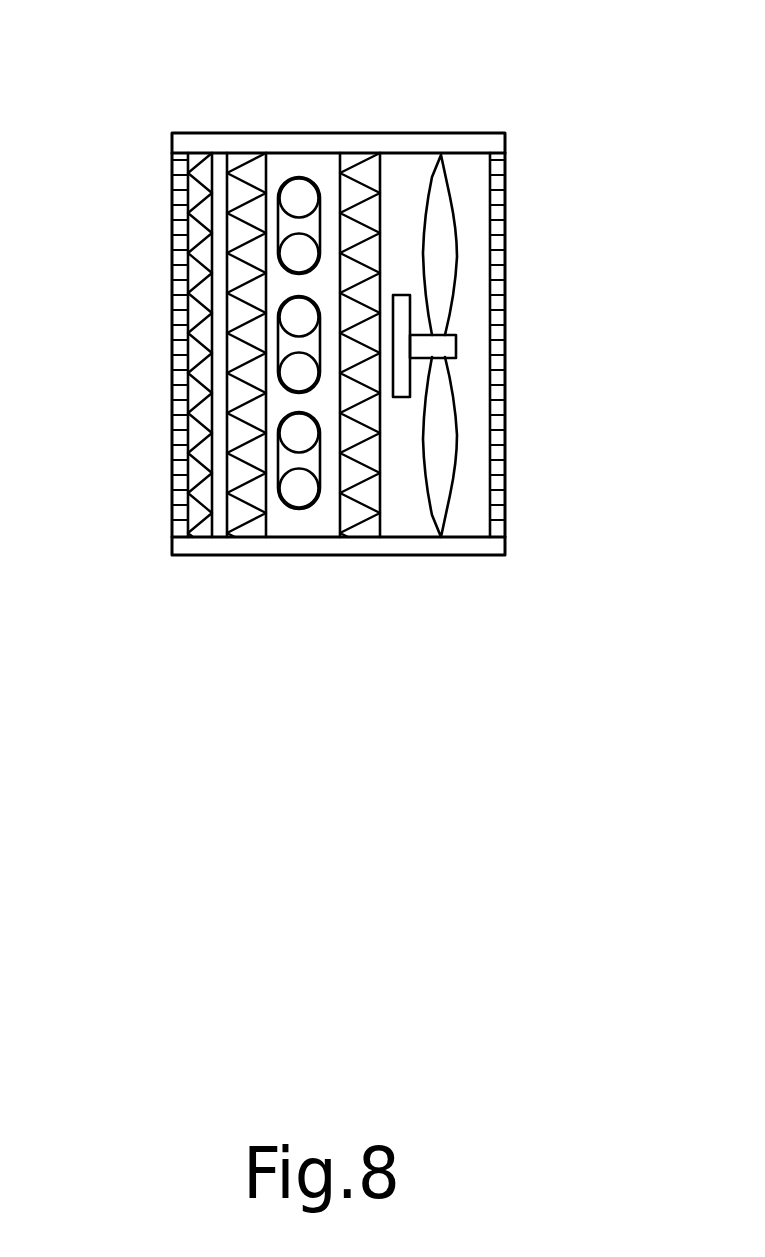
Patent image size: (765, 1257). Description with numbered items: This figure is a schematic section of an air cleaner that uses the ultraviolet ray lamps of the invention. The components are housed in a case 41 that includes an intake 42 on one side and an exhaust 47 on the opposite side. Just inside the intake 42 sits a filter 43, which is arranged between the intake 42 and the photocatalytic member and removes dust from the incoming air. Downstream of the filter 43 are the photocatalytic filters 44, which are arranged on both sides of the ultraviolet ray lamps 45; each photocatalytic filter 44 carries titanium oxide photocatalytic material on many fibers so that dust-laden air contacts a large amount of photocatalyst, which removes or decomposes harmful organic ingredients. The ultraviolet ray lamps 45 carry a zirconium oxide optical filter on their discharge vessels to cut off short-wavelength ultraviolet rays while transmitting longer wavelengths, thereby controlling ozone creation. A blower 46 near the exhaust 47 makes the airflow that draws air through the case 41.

The case 41 is at (287, 135).
The intake 42 is at (172, 357).
The filter 43 is at (202, 527).
The photocatalytic filter 44 is at (242, 158).
The ultraviolet ray lamp 45 is at (297, 508).
The blower 46 is at (440, 525).
The exhaust 47 is at (507, 358).